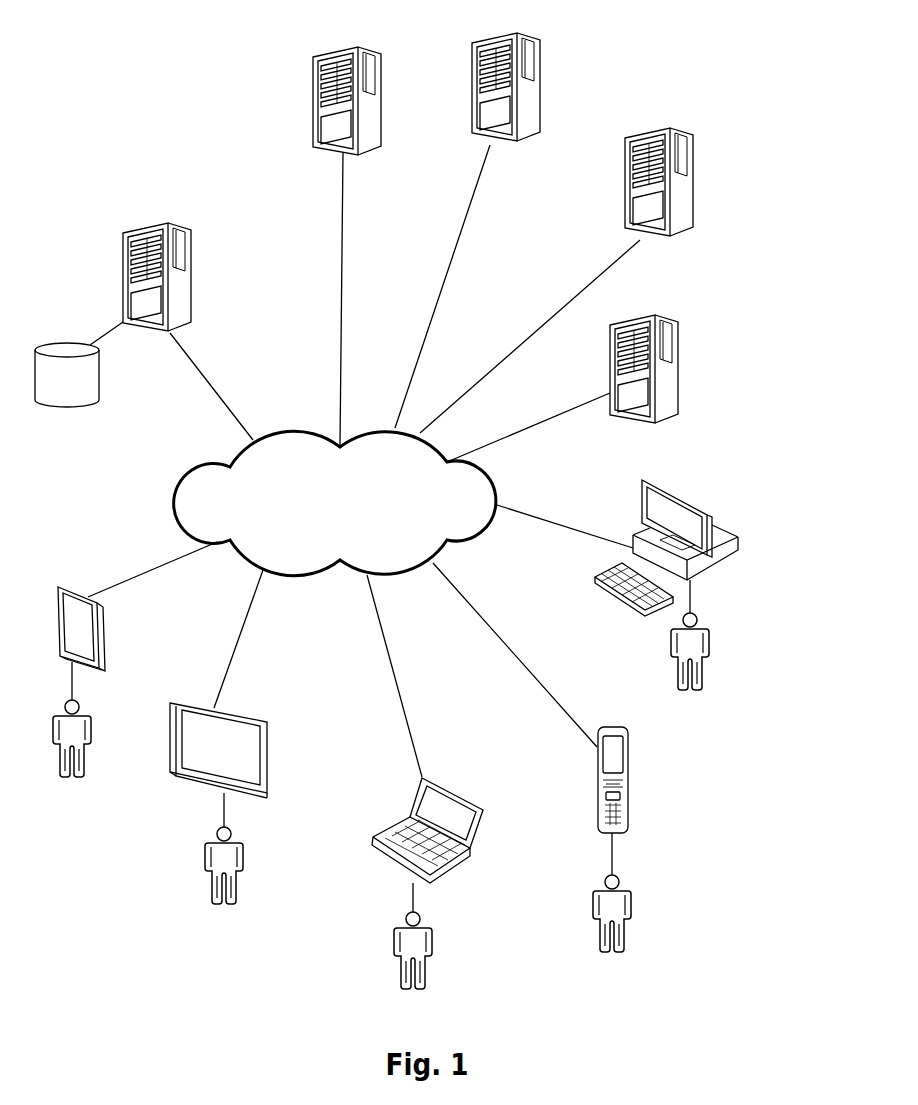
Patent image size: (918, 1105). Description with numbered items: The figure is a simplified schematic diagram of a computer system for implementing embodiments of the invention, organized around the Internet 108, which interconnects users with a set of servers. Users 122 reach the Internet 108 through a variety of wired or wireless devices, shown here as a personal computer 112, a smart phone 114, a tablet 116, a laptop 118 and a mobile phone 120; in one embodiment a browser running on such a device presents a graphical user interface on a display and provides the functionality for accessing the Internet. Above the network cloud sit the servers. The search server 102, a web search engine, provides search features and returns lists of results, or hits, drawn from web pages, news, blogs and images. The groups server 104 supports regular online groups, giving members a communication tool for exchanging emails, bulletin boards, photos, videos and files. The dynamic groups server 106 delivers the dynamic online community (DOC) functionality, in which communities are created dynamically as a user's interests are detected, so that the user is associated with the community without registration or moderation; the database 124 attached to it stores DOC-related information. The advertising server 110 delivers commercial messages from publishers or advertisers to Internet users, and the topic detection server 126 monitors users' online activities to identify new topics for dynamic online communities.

The search server 102 is at (328, 117).
The groups server 104 is at (683, 195).
The dynamic groups server 106 is at (183, 291).
The Internet 108 is at (292, 450).
The advertising server 110 is at (668, 395).
The personal computer 112 is at (715, 553).
The smart phone 114 is at (85, 630).
The tablet 116 is at (250, 748).
The laptop 118 is at (460, 825).
The mobile phone 120 is at (620, 757).
The users 122 is at (80, 770).
The database 124 is at (75, 405).
The topic detection server 126 is at (527, 112).